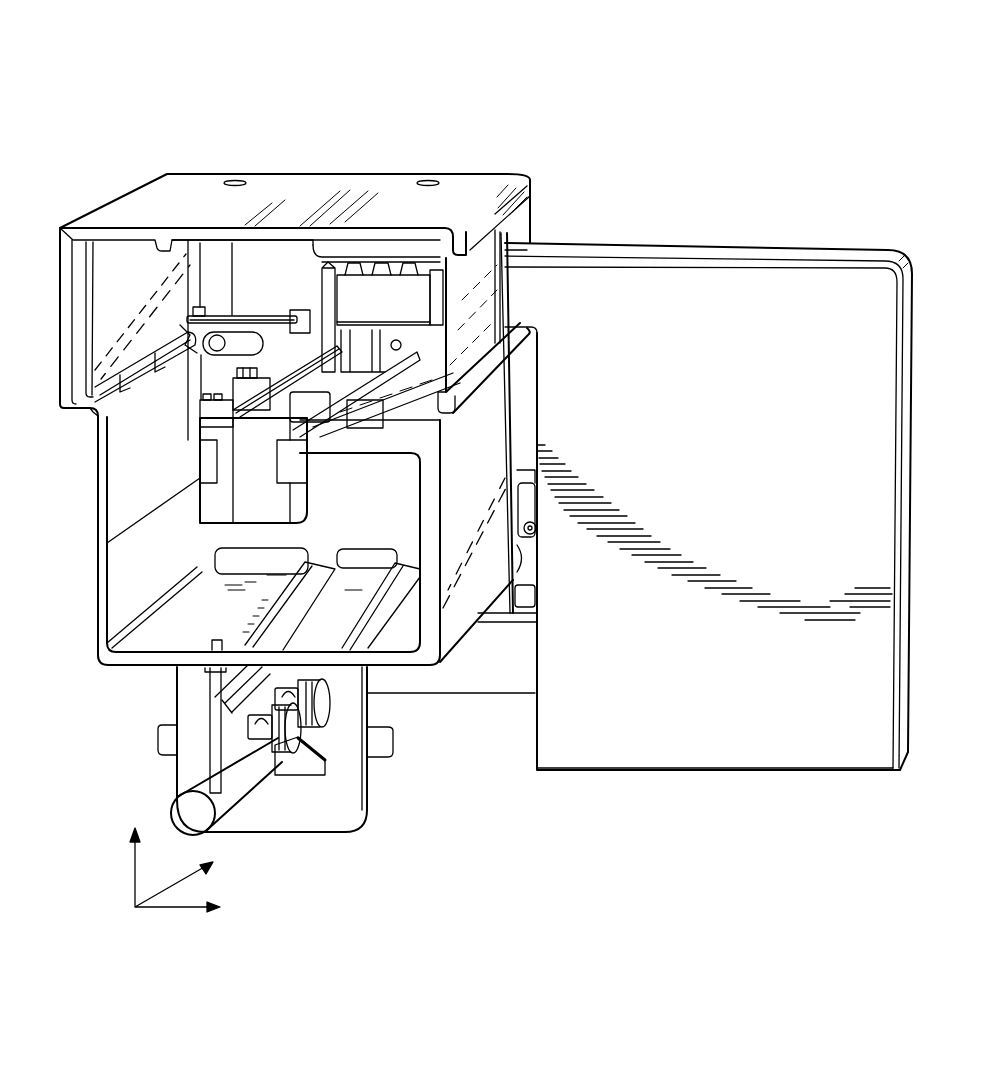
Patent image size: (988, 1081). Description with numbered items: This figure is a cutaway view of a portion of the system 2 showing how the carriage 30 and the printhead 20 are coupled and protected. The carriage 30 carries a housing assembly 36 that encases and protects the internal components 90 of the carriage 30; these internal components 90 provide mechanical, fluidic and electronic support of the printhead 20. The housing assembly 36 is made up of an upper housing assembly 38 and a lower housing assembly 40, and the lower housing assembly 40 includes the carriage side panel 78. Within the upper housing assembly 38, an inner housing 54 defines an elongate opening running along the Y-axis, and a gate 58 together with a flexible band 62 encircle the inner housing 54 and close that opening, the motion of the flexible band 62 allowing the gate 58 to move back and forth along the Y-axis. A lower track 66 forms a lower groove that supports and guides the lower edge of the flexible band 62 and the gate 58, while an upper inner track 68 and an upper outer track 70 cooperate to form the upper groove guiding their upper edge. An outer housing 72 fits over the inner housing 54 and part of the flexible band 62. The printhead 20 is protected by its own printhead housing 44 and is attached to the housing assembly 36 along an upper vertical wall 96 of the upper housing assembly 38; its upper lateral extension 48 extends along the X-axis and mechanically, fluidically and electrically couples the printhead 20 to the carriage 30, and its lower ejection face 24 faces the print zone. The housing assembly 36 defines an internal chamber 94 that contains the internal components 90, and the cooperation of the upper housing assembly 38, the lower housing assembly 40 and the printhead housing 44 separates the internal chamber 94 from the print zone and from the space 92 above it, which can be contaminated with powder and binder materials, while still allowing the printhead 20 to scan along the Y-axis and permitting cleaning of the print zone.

The system 2 is at (466, 498).
The carriage 30 is at (413, 73).
The printhead 20 is at (747, 310).
The lower ejection face 24 is at (653, 770).
The housing assembly 36 is at (213, 232).
The upper housing assembly 38 is at (277, 232).
The lower housing assembly 40 is at (418, 658).
The printhead housing 44 is at (735, 732).
The upper lateral extension 48 is at (528, 272).
The inner housing 54 is at (135, 236).
The gate 58 is at (520, 292).
The flexible band 62 is at (80, 294).
The lower track 66 is at (90, 405).
The upper inner track 68 is at (395, 243).
The upper outer track 70 is at (448, 236).
The outer housing 72 is at (78, 228).
The carriage side panel 78 is at (103, 490).
The internal components 90 is at (253, 437).
The space above the print zone 92 is at (581, 832).
The internal chamber 94 is at (160, 467).
The upper vertical wall 96 is at (477, 279).